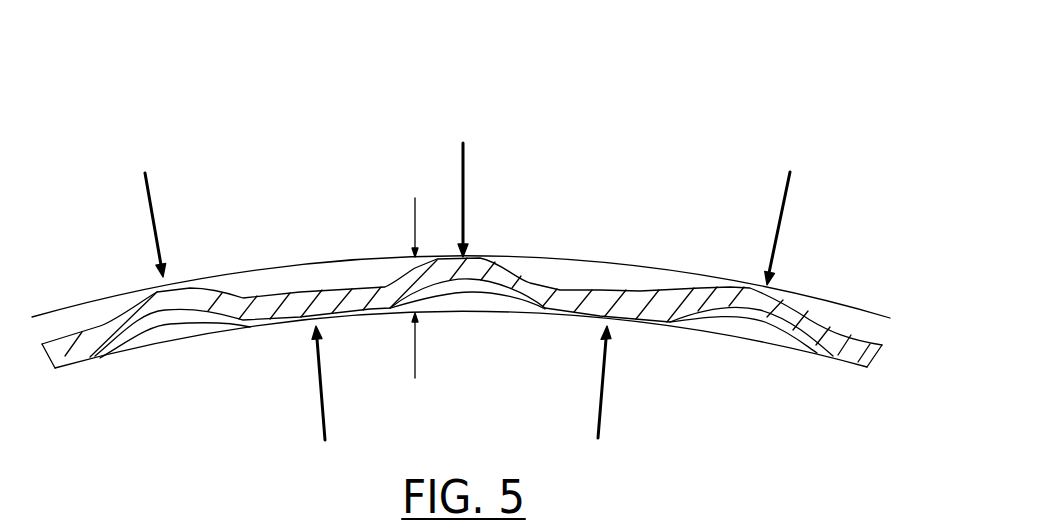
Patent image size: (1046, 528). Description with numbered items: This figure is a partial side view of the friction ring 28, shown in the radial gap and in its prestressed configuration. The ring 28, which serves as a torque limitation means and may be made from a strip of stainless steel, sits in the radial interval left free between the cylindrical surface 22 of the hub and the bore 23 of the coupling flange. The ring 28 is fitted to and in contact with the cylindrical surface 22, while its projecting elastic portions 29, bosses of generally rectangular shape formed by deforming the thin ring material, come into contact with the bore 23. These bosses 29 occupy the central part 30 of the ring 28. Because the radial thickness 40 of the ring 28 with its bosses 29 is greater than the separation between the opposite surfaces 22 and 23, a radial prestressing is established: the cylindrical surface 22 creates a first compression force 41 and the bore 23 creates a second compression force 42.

The cylindrical surface 22 is at (170, 349).
The bore 23 is at (109, 286).
The friction ring 28 is at (658, 103).
The projecting elastic portions 29 is at (211, 286).
The central part 30 is at (345, 287).
The radial thickness 40 is at (399, 282).
The first compression force 41 is at (321, 385).
The second compression force 42 is at (154, 222).